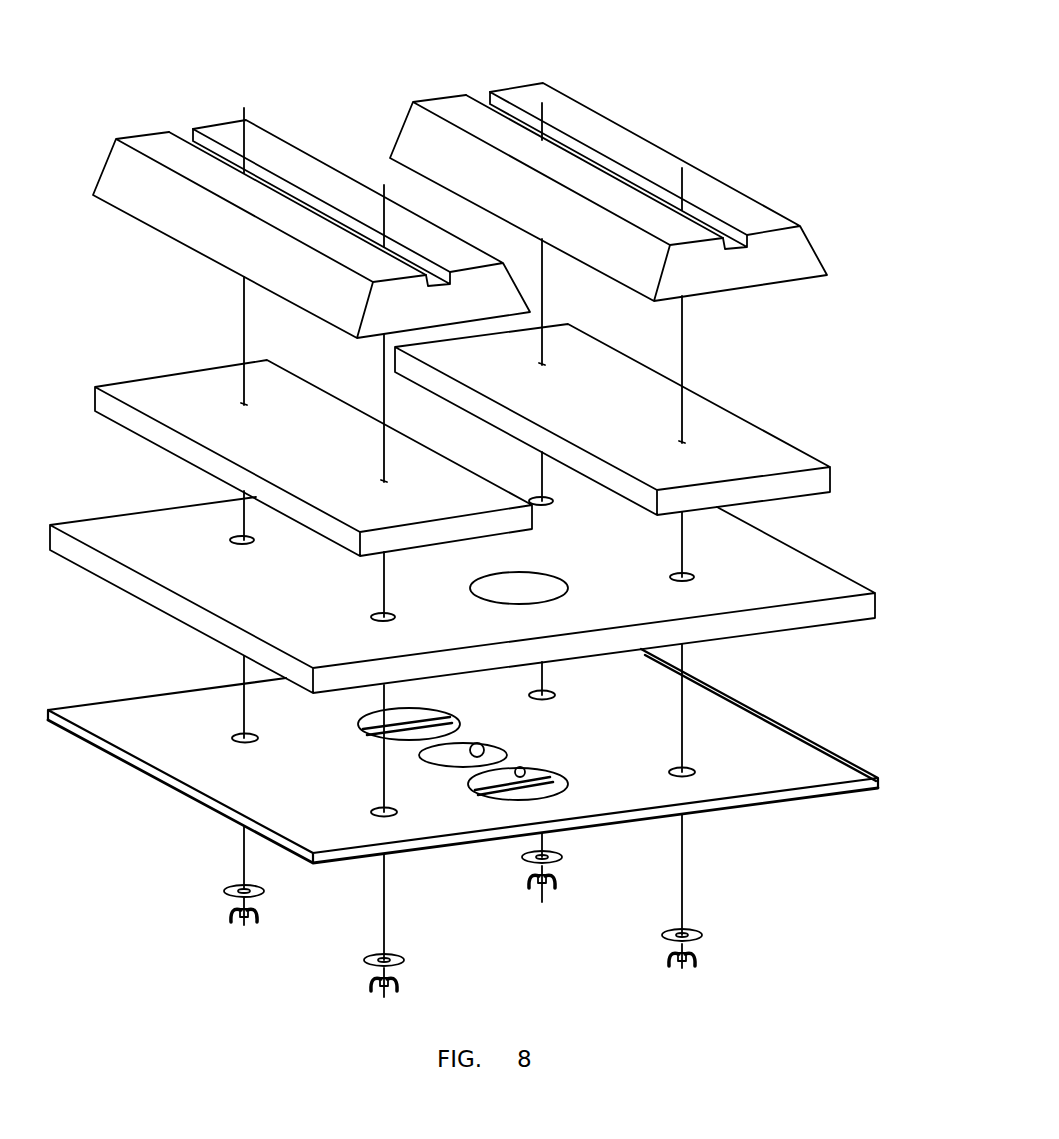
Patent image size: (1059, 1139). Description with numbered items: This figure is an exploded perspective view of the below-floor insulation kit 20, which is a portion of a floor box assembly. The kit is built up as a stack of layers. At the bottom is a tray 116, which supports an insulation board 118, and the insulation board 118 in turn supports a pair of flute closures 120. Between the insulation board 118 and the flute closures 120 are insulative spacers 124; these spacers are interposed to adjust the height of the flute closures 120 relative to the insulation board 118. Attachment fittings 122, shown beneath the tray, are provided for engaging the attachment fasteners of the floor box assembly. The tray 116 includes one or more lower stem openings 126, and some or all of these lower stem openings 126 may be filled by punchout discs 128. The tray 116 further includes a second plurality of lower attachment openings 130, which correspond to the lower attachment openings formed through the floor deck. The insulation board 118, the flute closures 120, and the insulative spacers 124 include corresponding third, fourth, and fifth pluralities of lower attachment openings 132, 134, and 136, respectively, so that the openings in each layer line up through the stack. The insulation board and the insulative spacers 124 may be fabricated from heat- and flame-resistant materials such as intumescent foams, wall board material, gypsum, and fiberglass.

The below-floor insulation kit 20 is at (678, 88).
The tray 116 is at (768, 798).
The insulation board 118 is at (757, 620).
The flute closures 120 is at (347, 310).
The attachment fittings 122 is at (274, 893).
The insulative spacers 124 is at (407, 537).
The lower stem openings 126 is at (521, 769).
The punchout discs 128 is at (547, 778).
The lower attachment openings (second plurality) 130 is at (258, 737).
The lower attachment openings (third plurality) 132 is at (288, 537).
The lower attachment openings (fourth plurality) 134 is at (246, 172).
The lower attachment openings (fifth plurality) 136 is at (244, 404).